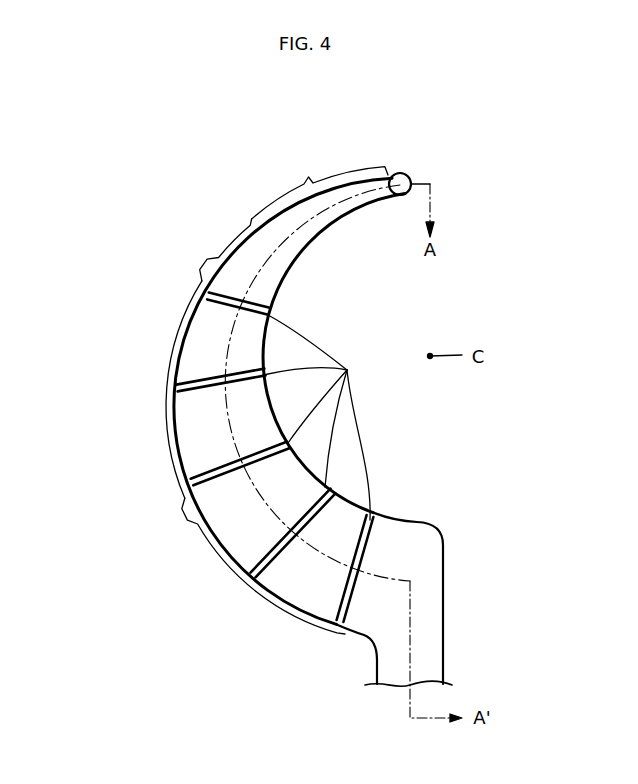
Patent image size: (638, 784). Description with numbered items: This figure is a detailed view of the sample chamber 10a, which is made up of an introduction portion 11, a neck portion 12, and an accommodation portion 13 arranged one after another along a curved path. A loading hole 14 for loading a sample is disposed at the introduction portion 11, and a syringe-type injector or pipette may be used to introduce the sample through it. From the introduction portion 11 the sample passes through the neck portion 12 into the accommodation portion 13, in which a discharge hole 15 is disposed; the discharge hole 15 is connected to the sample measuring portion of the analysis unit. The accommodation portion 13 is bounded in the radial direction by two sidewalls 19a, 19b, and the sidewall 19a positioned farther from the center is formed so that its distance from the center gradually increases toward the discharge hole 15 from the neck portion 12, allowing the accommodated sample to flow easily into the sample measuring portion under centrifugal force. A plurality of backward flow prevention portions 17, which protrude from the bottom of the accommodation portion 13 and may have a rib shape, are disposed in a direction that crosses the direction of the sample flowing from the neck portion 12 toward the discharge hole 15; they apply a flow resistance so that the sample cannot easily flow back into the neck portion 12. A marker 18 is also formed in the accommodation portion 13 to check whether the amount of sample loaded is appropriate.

The sample chamber 10a is at (147, 241).
The introduction portion 11 is at (320, 183).
The neck portion 12 is at (220, 250).
The accommodation portion 13 is at (251, 566).
The loading hole 14 is at (402, 172).
The discharge hole 15 is at (437, 657).
The backward flow prevention portion 17 is at (319, 417).
The marker 18 is at (314, 614).
The sidewall 19a is at (402, 520).
The sidewall 19b is at (175, 432).